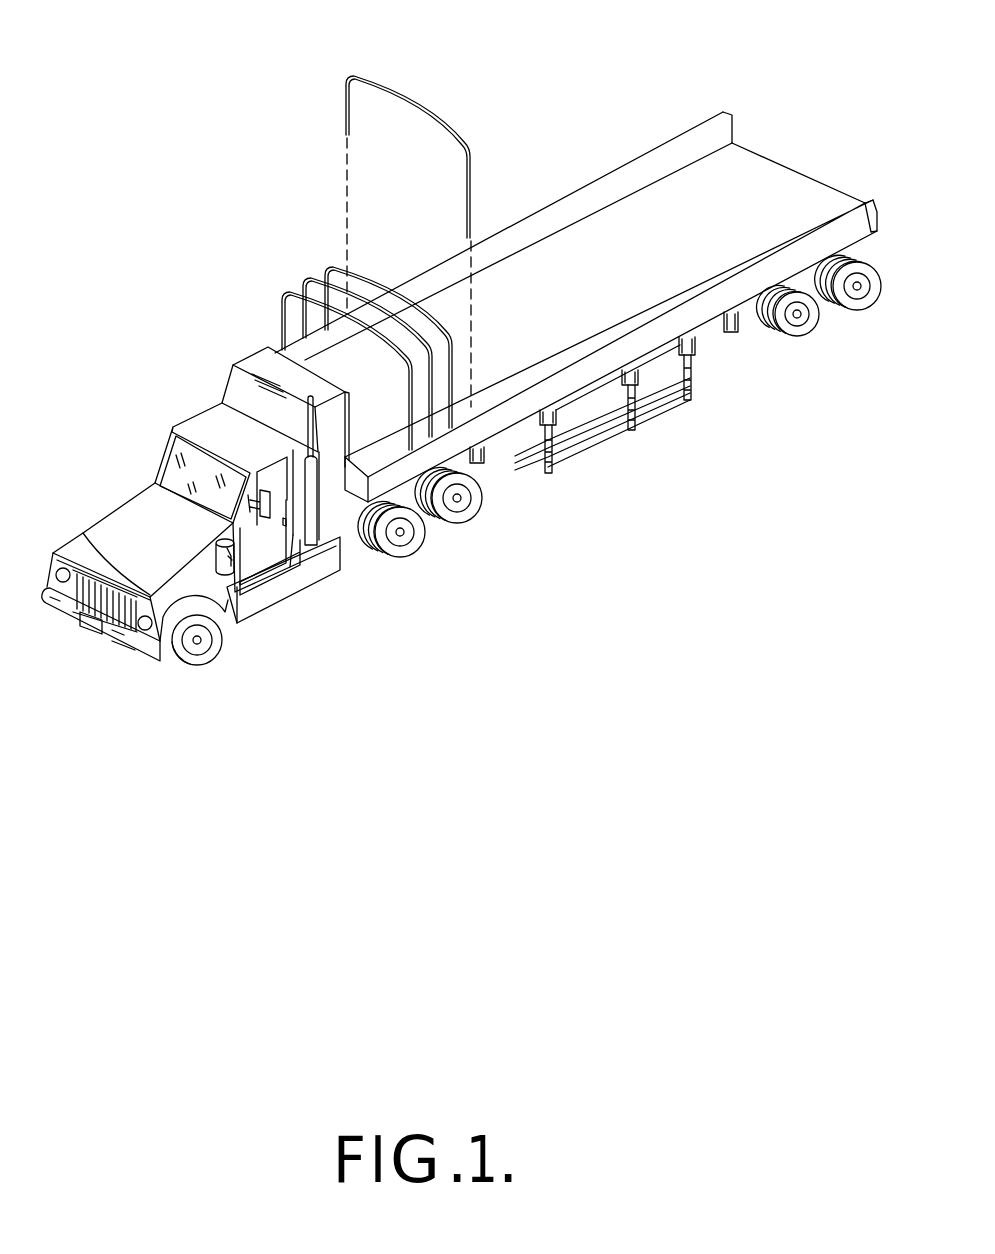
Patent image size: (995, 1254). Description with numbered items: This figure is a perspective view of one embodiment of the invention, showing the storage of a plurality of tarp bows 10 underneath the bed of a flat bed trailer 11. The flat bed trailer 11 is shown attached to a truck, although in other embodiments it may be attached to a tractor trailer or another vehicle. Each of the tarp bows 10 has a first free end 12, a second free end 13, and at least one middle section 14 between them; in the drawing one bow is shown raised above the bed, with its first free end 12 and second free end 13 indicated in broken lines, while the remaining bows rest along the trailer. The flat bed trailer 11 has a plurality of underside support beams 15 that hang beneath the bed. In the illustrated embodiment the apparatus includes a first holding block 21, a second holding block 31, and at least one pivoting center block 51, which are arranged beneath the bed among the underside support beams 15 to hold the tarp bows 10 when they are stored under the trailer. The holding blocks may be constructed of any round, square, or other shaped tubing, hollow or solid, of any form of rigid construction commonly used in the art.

The tarp bows 10 is at (578, 329).
The flat bed trailer 11 is at (778, 163).
The first free end 12 is at (346, 134).
The second free end 13 is at (474, 239).
The middle section 14 is at (403, 210).
The underside support beams 15 is at (700, 344).
The first holding block 21 is at (546, 470).
The second holding block 31 is at (690, 398).
The pivoting center block 51 is at (634, 432).